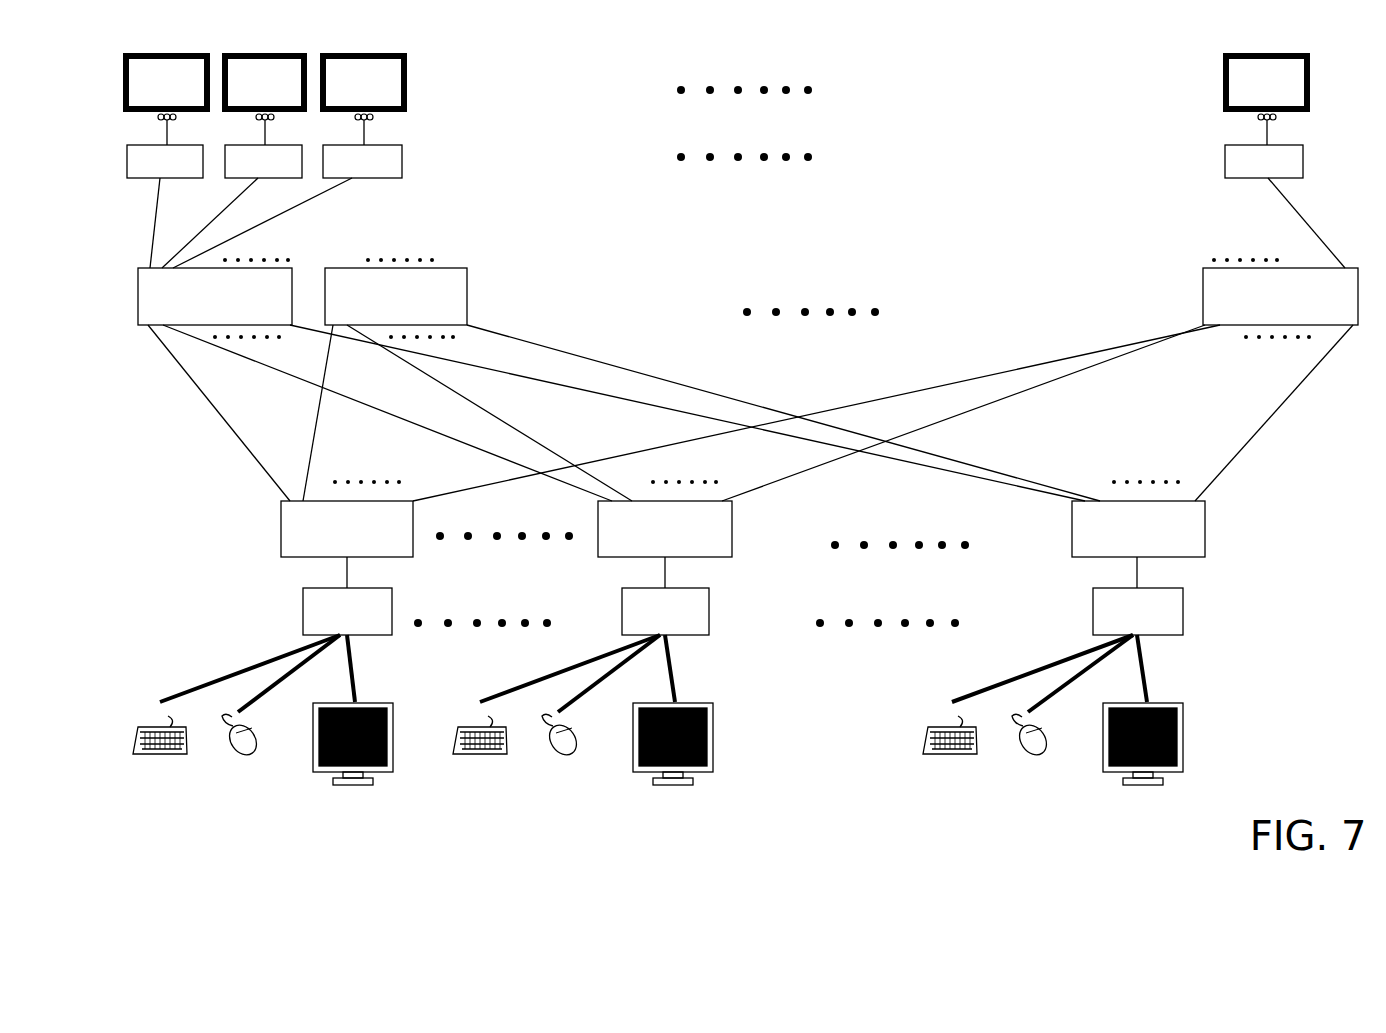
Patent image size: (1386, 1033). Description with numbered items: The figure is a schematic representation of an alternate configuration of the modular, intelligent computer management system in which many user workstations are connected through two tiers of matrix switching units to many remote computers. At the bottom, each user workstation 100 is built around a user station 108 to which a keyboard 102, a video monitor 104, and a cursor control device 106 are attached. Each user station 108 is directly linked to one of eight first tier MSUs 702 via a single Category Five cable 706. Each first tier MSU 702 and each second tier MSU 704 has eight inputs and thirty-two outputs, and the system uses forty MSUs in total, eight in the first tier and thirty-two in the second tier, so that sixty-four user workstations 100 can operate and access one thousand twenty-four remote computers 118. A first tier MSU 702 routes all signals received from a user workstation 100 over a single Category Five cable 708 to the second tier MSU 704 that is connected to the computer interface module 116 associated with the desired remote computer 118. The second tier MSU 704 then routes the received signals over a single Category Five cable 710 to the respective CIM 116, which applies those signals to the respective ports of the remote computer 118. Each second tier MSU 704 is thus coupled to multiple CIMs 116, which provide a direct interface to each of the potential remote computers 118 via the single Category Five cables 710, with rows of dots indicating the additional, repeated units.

The user workstation 100 is at (658, 781).
The keyboard 102 is at (555, 749).
The video monitor 104 is at (1020, 809).
The cursor control device 106 is at (692, 762).
The user station 108 is at (743, 611).
The computer interface module 116 is at (715, 149).
The remote computer 118 is at (716, 88).
The first tier MSU 702 is at (743, 518).
The second tier MSU 704 is at (748, 298).
The single CAT 5 cable 706 is at (336, 569).
The single CAT 5 cable 708 is at (750, 413).
The single CAT 5 cable 710 is at (726, 223).